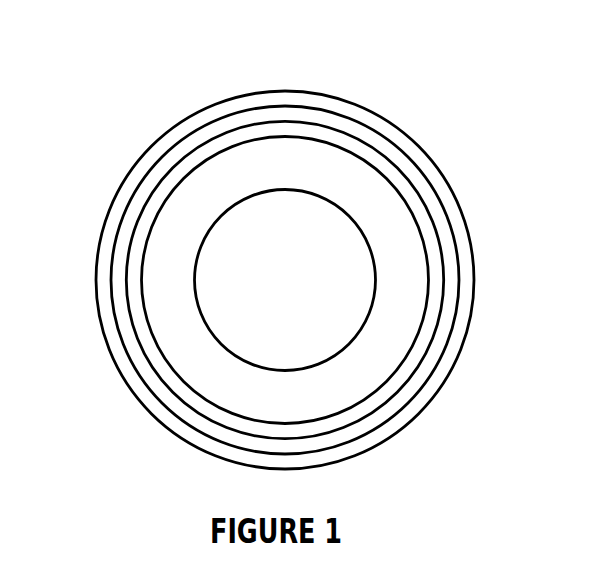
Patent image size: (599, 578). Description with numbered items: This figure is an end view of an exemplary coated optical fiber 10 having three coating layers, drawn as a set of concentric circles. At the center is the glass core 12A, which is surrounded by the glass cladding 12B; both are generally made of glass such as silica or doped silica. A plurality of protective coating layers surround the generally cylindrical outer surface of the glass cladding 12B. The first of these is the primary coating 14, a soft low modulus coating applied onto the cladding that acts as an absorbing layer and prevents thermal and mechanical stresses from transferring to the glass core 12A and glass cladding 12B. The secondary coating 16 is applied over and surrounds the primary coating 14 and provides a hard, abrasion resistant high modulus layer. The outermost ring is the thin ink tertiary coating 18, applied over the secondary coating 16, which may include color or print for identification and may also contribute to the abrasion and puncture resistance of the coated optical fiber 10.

The coated optical fiber 10 is at (127, 150).
The glass core 12A is at (267, 217).
The glass cladding 12B is at (307, 162).
The primary coating 14 is at (373, 163).
The secondary coating 16 is at (428, 200).
The ink tertiary coating 18 is at (467, 255).